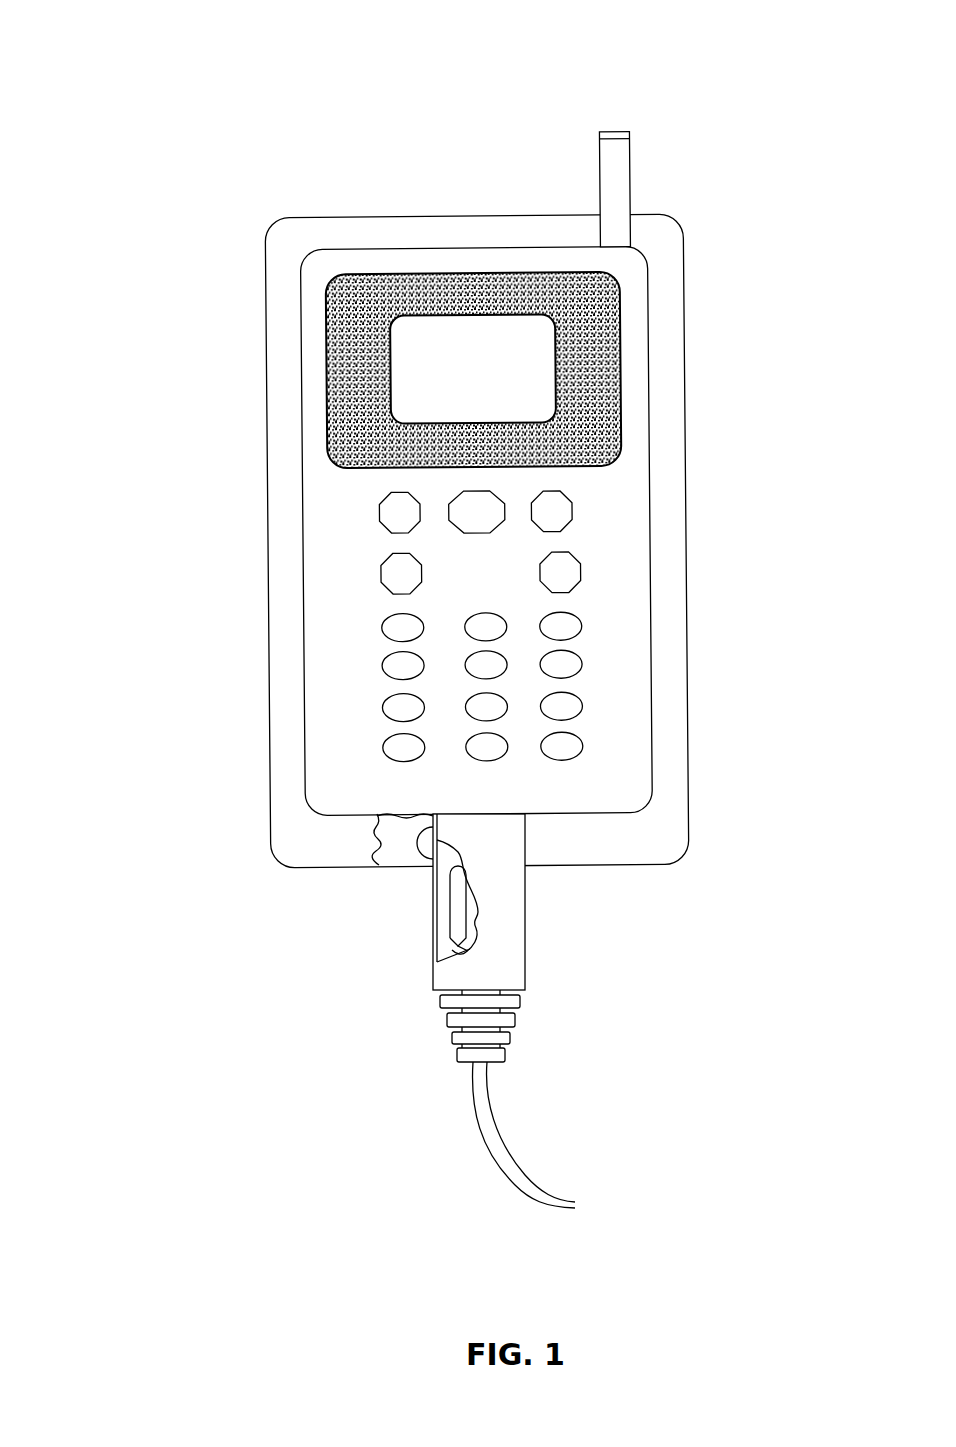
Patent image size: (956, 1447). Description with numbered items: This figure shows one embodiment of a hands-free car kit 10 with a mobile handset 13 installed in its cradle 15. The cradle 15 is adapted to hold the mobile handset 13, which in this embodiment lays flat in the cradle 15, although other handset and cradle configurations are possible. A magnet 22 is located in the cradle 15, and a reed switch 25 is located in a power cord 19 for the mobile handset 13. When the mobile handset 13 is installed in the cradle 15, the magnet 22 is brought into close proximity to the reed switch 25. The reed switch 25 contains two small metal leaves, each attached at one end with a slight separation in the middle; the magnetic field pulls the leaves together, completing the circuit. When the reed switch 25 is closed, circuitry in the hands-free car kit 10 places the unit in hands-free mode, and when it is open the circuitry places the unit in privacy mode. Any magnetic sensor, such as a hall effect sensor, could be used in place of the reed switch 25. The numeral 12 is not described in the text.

The hands-free car kit 10 is at (401, 94).
The cellular telephone 12 is at (235, 446).
The mobile handset 13 is at (403, 248).
The cradle 15 is at (684, 232).
The power cord 19 is at (525, 900).
The magnet 22 is at (417, 842).
The reed switch 25 is at (433, 895).